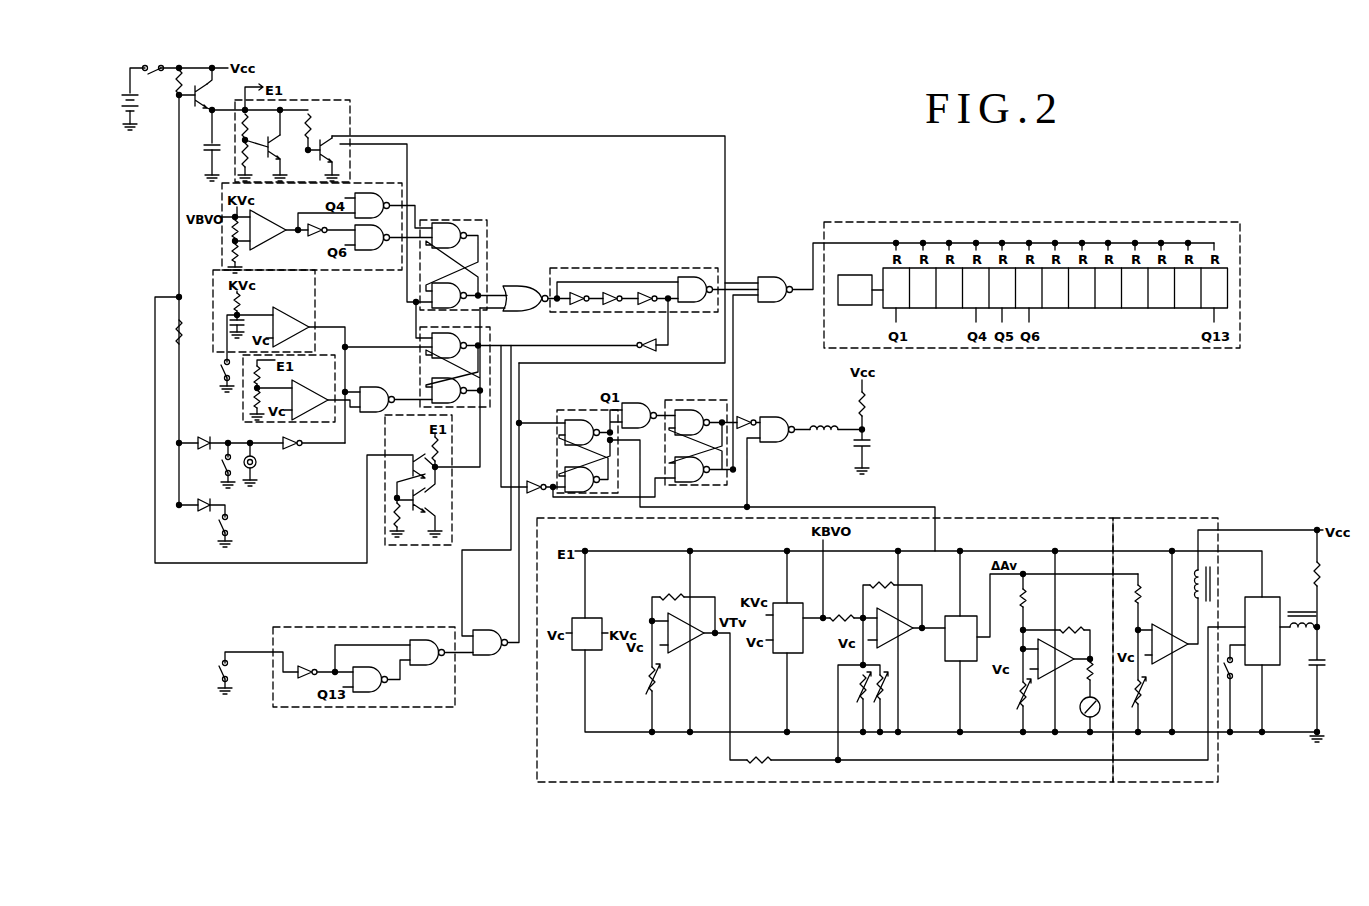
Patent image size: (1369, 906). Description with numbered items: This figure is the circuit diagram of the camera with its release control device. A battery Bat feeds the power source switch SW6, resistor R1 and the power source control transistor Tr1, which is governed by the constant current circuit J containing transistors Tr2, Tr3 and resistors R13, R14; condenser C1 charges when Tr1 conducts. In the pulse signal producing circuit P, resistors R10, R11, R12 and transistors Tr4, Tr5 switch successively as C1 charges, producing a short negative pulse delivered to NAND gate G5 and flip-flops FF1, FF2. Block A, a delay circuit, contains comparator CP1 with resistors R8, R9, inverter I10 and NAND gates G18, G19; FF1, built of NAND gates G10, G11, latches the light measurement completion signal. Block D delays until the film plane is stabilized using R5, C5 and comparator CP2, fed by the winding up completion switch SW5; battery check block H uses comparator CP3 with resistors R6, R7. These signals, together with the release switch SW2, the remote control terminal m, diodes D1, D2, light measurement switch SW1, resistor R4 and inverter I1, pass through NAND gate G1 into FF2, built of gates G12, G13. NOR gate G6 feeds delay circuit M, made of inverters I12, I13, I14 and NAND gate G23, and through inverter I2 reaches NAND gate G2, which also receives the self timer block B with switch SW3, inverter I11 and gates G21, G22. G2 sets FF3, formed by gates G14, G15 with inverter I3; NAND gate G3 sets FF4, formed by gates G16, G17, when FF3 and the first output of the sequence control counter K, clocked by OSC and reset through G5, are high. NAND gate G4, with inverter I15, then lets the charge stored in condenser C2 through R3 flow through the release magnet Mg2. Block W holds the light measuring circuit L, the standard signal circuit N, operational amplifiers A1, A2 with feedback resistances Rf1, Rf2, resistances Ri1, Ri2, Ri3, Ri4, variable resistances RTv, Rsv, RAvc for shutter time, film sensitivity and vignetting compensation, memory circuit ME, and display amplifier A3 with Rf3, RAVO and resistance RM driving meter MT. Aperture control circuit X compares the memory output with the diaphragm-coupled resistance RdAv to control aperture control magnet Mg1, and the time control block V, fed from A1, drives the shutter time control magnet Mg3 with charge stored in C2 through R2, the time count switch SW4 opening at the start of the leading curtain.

The battery Bat is at (117, 112).
The light measurement switch SW1 is at (241, 531).
The release switch SW2 is at (213, 465).
The self-timer switch SW3 is at (258, 673).
The time count switch SW4 is at (1246, 681).
The winding up completion switch SW5 is at (213, 376).
The power source switch SW6 is at (154, 85).
The resistor R1 is at (174, 97).
The resistance R2 is at (1329, 575).
The resistance R3 is at (873, 405).
The resistor R4 is at (169, 332).
The resistance of the delay time constant circuit R5 is at (248, 303).
The resistor R6 is at (267, 377).
The resistor R7 is at (254, 404).
The resistor R8 is at (227, 238).
The resistor R9 is at (227, 258).
The resistor R10 is at (261, 126).
The resistor R11 is at (259, 162).
The resistor R12 is at (323, 132).
The resistor R13 is at (443, 449).
The resistor R14 is at (412, 518).
The power source control transistor Tr1 is at (206, 89).
The transistor Tr2 is at (416, 469).
The transistor Tr3 is at (430, 498).
The transistor Tr4 is at (275, 145).
The transistor Tr5 is at (337, 150).
The condenser C1 is at (206, 145).
The condenser C2 is at (1099, 581).
The condenser of the delay time constant circuit C5 is at (229, 320).
The diode D1 is at (196, 435).
The diode D2 is at (196, 498).
The remote control terminal m is at (257, 464).
The inverter I1 is at (296, 457).
The inverter I2 is at (657, 347).
The inverter I3 is at (536, 478).
The inverter I10 is at (311, 242).
The inverter I11 is at (307, 663).
The inverter I12 is at (578, 306).
The inverter I13 is at (610, 306).
The inverter I14 is at (645, 306).
The inverter I15 is at (743, 418).
The comparator CP1 is at (271, 223).
The comparator CP2 is at (291, 320).
The comparator CP3 is at (1182, 664).
The NAND gate G1 is at (377, 399).
The NAND gate G2 is at (490, 642).
The NAND gate G3 is at (639, 415).
The NAND gate G4 is at (777, 429).
The NAND gate G5 is at (775, 289).
The NOR gate G6 is at (525, 298).
The NAND gate G10 is at (449, 235).
The NAND gate G11 is at (449, 295).
The NAND gate G12 is at (449, 345).
The NAND gate G13 is at (449, 390).
The NAND gate G14 is at (582, 432).
The NAND gate G15 is at (582, 479).
The NAND gate G16 is at (692, 422).
The NAND gate G17 is at (692, 469).
The NAND gate G18 is at (372, 205).
The NAND gate G19 is at (372, 237).
The NAND gate G21 is at (370, 679).
The NAND gate G22 is at (427, 652).
The NAND gate G23 is at (695, 289).
The flip-flop FF1 is at (457, 257).
The flip-flop FF2 is at (468, 367).
The flip-flop FF3 is at (586, 443).
The flip-flop FF4 is at (696, 435).
The pulse signal producing circuit P is at (292, 141).
The delay circuit A is at (312, 226).
The delay circuit D is at (264, 311).
The battery check circuit block H is at (289, 388).
The constant current circuit J is at (418, 480).
The self timer set circuit block B is at (364, 667).
The delay circuit M is at (634, 281).
The sequence control counter block K is at (1032, 285).
The clock pulse generator OSC is at (855, 290).
The light measurement, calculation, memory display and constant voltage block W is at (1079, 516).
The aperture control circuit X is at (1190, 516).
The standard signal producing circuit block N is at (587, 634).
The light measuring circuit L is at (788, 628).
The memory circuit ME is at (961, 638).
The drive circuit V is at (1262, 631).
The operational amplifier A1 is at (686, 633).
The operational amplifier A2 is at (895, 628).
The display operational amplifier A3 is at (1056, 659).
The feedback resistance Rf1 is at (683, 604).
The feedback resistance Rf2 is at (892, 596).
The feedback resistor Rf3 is at (1056, 634).
The input resistor Ri1 is at (842, 609).
The input resistor Ri2 is at (995, 695).
The input resistor Ri3 is at (1037, 599).
The input resistor Ri4 is at (1151, 591).
The variable resistance RTv is at (666, 676).
The variable resistance Rsv is at (858, 697).
The variable resistance RAvc is at (884, 697).
The smallest aperture value setting resistance RAVO is at (1009, 690).
The diaphragm-coupled resistance RdAv is at (1155, 704).
The meter resistor RM is at (1079, 678).
The meter MT is at (1078, 714).
The aperture control magnet Mg1 is at (1212, 590).
The release magnet Mg2 is at (826, 415).
The shutter time control magnet Mg3 is at (1301, 611).